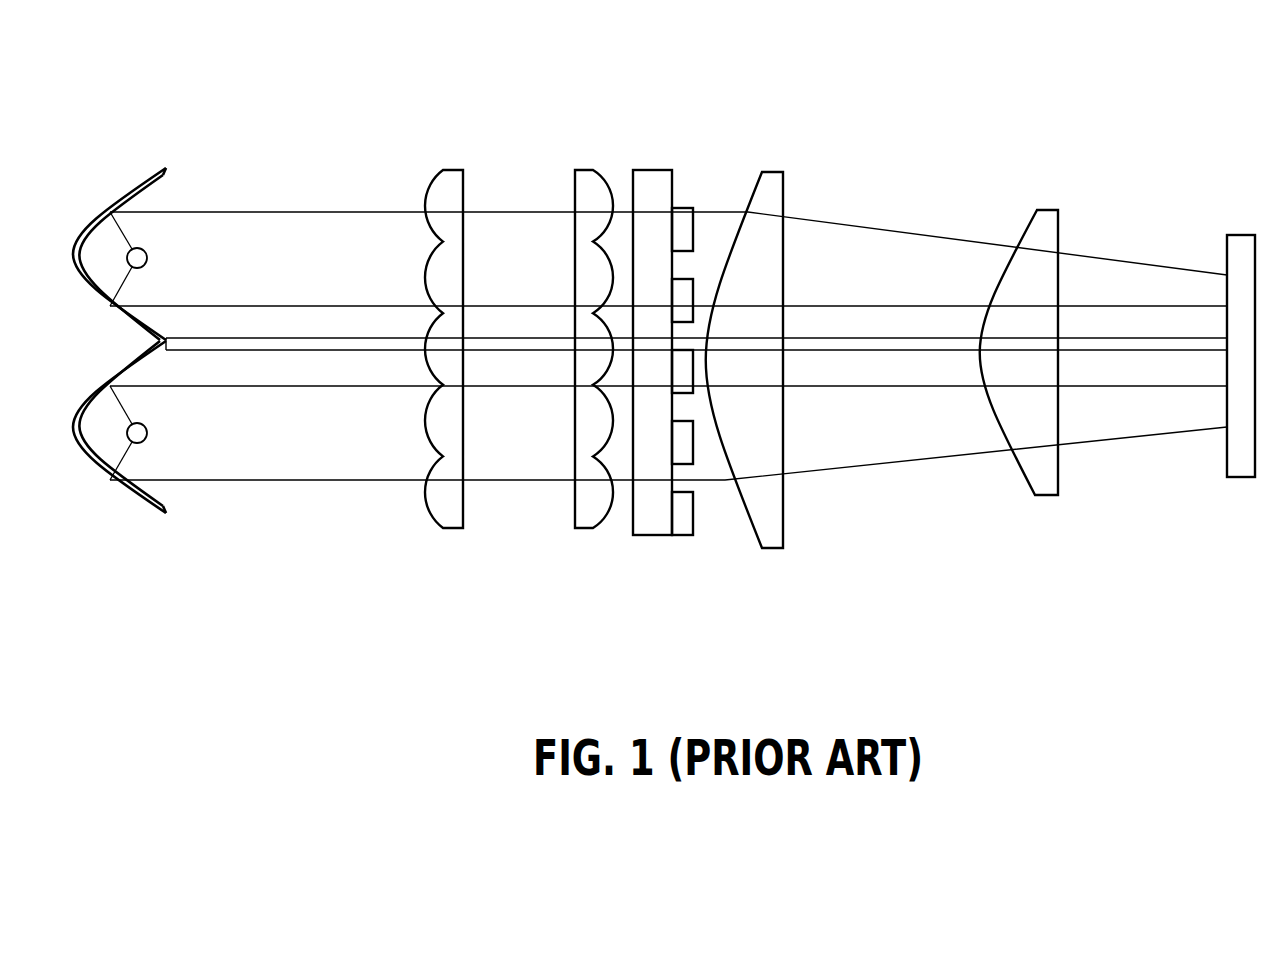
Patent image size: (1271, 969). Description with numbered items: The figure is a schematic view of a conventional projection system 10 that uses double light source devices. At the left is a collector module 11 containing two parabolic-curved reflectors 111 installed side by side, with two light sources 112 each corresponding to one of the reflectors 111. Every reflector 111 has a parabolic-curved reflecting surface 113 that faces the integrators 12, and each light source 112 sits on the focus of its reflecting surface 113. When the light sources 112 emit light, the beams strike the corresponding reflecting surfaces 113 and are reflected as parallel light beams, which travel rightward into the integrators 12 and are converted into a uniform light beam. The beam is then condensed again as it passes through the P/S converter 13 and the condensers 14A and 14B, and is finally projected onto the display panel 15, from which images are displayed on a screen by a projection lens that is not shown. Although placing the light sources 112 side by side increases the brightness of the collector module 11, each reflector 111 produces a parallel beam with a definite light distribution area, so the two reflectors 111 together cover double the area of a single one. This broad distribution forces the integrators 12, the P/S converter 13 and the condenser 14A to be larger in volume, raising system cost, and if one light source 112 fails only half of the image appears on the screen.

The projection system 10 is at (890, 100).
The collector module 11 is at (178, 363).
The parabolic-curved reflector 111 is at (123, 190).
The light source 112 is at (147, 252).
The parabolic-curved reflecting surface 113 is at (137, 189).
The integrator 12 is at (593, 517).
The P/S converter 13 is at (655, 517).
The condenser 14A is at (776, 520).
The condenser 14B is at (1053, 480).
The display panel 15 is at (1245, 243).